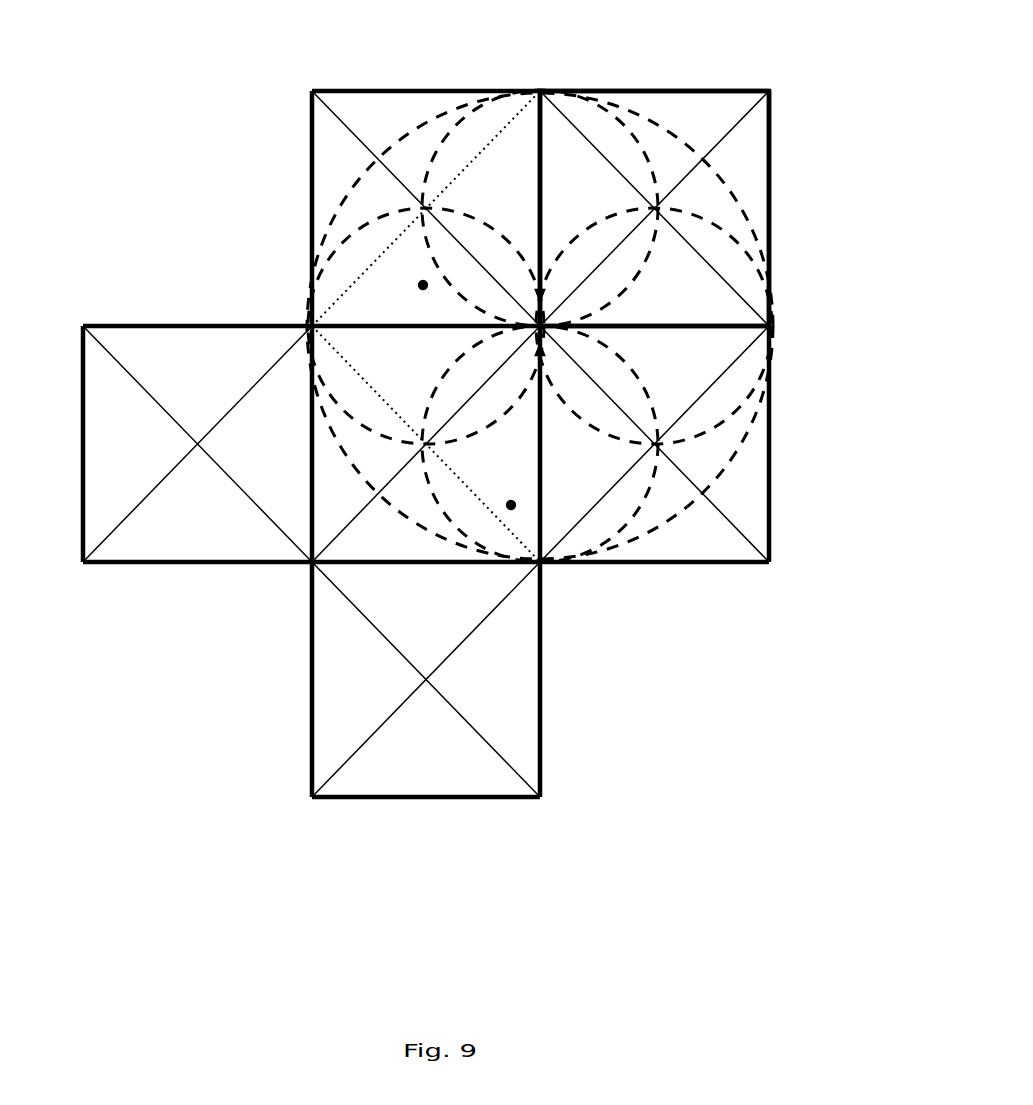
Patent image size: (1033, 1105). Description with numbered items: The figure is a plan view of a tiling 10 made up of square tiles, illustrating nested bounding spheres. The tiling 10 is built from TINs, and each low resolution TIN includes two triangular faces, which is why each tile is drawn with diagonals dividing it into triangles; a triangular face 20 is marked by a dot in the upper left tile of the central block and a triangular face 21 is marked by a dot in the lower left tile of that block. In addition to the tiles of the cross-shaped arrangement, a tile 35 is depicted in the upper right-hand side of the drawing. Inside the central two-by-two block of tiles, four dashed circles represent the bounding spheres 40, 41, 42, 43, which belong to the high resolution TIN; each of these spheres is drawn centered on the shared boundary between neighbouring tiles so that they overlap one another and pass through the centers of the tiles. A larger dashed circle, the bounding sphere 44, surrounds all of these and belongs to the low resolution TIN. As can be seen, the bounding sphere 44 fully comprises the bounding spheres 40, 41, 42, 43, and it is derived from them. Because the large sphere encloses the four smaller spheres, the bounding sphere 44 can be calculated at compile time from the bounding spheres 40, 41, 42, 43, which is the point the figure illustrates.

The tiling 10 is at (115, 106).
The triangular face 20 is at (421, 284).
The triangular face 21 is at (513, 507).
The tile 35 is at (783, 221).
The bounding sphere 40 is at (338, 222).
The bounding sphere 41 is at (650, 128).
The bounding sphere 42 is at (720, 204).
The bounding sphere 43 is at (633, 536).
The bounding sphere 44 is at (403, 121).